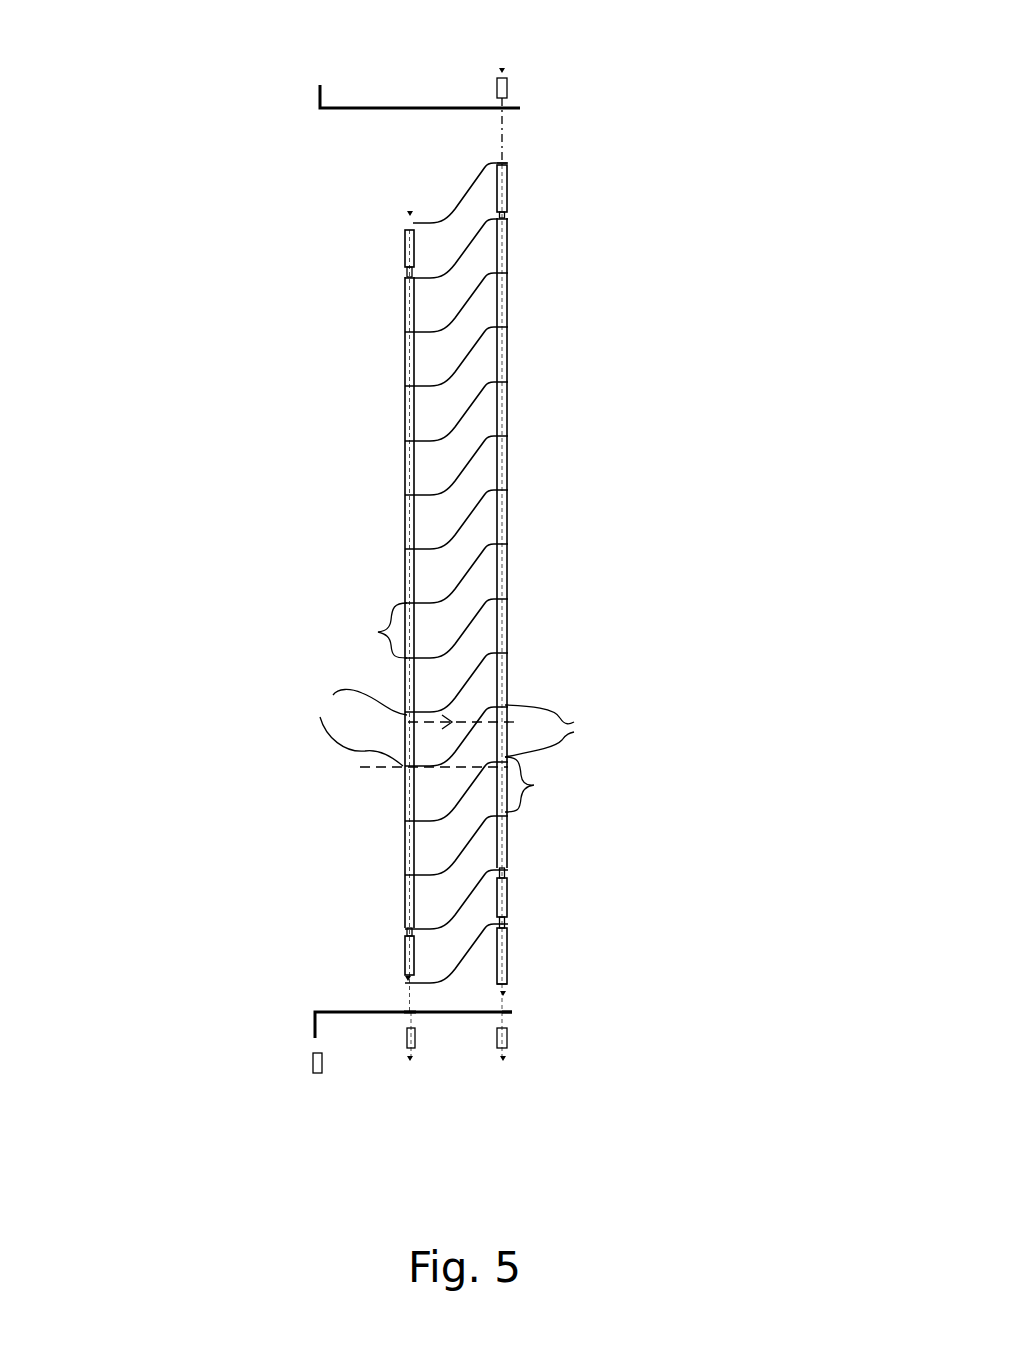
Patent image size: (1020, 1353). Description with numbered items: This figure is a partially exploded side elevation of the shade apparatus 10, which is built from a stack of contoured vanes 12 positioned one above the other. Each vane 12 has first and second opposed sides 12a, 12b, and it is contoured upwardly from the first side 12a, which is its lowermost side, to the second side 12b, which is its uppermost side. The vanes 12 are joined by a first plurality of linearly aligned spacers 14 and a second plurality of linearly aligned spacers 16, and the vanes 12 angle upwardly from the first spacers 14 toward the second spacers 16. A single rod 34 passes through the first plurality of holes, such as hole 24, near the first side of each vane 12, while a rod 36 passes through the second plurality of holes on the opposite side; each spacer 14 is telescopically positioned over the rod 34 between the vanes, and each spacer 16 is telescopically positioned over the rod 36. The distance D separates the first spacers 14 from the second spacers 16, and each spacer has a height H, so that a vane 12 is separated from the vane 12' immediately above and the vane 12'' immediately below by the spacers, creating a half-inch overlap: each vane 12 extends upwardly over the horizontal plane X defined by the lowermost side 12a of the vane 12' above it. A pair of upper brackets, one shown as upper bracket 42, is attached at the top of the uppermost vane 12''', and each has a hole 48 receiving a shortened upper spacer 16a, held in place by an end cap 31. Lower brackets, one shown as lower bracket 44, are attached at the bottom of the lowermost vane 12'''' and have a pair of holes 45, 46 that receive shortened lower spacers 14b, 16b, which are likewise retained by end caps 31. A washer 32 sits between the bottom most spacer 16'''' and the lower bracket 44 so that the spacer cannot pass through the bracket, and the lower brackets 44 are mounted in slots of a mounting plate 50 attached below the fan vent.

The shade apparatus 10 is at (124, 150).
The vane 12 is at (414, 601).
The vane immediately above 12' is at (557, 670).
The vane immediately below 12'' is at (517, 806).
The uppermost vane 12''' is at (368, 195).
The lowermost vane 12'''' is at (566, 897).
The first side 12a is at (353, 727).
The second side 12b is at (560, 731).
The first plurality of spacers 14 is at (405, 367).
The shortened lower spacer 14b is at (416, 1048).
The second plurality of spacers 16 is at (640, 588).
The shortened upper spacer 16a is at (509, 84).
The shortened lower spacer 16b is at (508, 1038).
The bottom most spacer 16'''' is at (621, 954).
The hole 24 is at (500, 162).
The end cap 31 is at (503, 68).
The washer 32 is at (506, 996).
The rod 34 is at (409, 271).
The rod 36 is at (506, 213).
The upper bracket 42 is at (378, 108).
The lower bracket 44 is at (353, 1012).
The hole 45 is at (506, 1018).
The hole 46 is at (410, 1010).
The hole 48 is at (510, 104).
The mounting plate 50 is at (312, 1062).
The distance D is at (440, 712).
The height H is at (457, 707).
The horizontal plane X is at (440, 768).